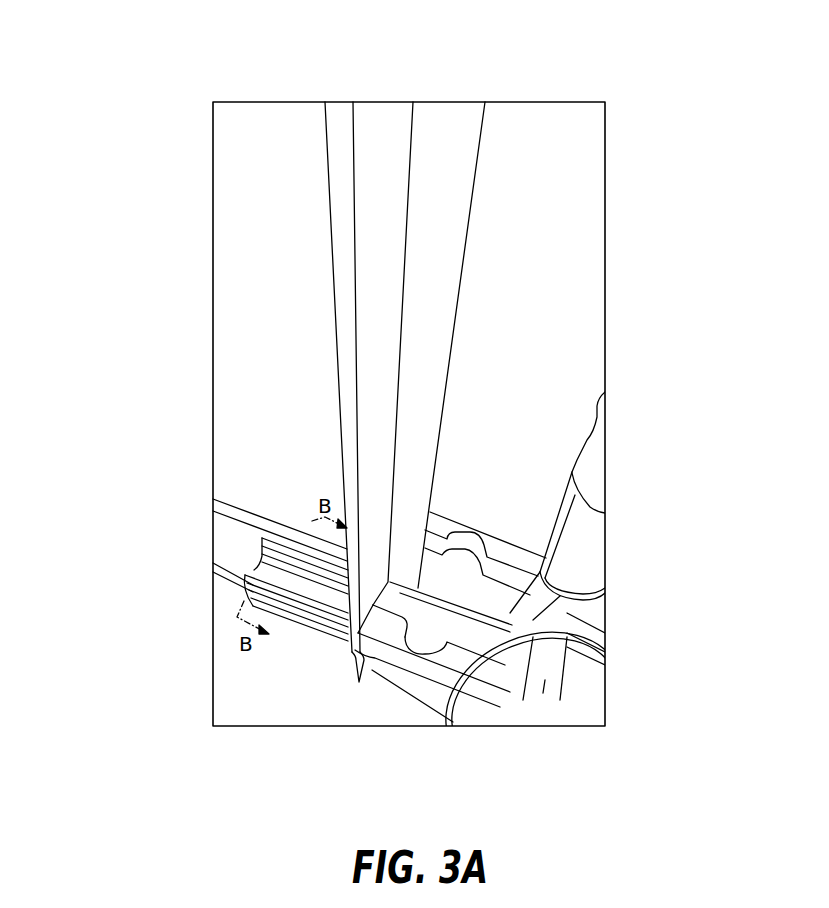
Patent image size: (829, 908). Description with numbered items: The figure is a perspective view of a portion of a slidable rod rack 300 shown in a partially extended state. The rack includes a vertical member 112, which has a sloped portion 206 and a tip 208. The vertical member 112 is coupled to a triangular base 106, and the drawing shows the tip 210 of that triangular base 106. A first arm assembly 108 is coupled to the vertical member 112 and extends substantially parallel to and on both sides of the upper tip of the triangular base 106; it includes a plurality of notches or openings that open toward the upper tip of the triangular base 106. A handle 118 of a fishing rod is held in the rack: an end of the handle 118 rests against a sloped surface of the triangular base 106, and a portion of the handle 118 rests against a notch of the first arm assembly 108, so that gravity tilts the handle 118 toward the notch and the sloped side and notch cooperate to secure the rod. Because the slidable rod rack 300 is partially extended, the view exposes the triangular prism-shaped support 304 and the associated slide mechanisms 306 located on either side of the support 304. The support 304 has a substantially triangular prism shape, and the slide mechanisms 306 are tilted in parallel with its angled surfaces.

The slidable rod rack 300 is at (99, 42).
The vertical member 112 is at (392, 140).
The sloped portion 206 is at (377, 312).
The tip 208 is at (438, 308).
The tip of the triangular base 210 is at (440, 604).
The first arm assembly 108 is at (453, 517).
The triangular base 106 is at (450, 680).
The handle 118 is at (588, 548).
The slide mechanisms 306 is at (262, 553).
The triangular prism-shaped support 304 is at (232, 547).